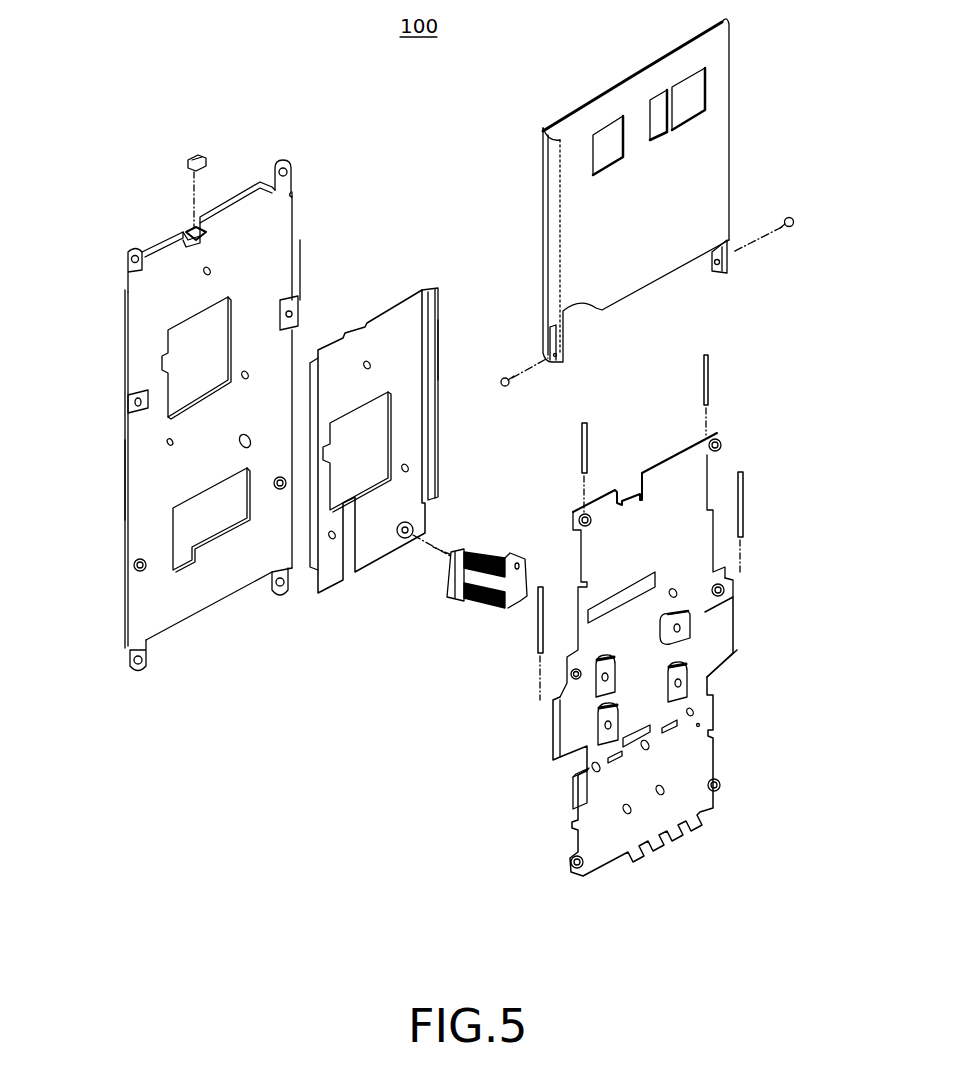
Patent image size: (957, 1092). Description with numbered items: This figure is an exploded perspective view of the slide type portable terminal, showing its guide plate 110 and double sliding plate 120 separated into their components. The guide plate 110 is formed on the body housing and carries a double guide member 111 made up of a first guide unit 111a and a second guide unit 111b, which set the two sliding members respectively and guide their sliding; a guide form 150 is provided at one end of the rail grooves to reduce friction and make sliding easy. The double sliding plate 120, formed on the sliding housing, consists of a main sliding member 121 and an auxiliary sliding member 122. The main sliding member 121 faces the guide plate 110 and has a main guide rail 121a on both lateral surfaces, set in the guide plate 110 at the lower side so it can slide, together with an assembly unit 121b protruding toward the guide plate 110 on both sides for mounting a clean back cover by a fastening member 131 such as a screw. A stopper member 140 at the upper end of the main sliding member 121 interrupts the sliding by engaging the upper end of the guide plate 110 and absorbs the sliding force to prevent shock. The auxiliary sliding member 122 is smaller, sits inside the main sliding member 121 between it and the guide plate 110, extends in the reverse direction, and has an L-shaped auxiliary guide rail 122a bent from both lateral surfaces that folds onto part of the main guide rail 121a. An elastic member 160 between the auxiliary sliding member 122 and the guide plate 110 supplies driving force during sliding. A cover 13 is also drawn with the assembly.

The rear cover / battery cover 13 is at (648, 263).
The guide plate 110 is at (605, 850).
The double guide member 111 is at (812, 636).
The first guide unit 111a is at (737, 628).
The second guide unit 111b is at (710, 470).
The double sliding plate 120 is at (403, 176).
The main sliding member 121 is at (278, 207).
The main guide rail 121a is at (124, 486).
The assembly unit 121b is at (130, 403).
The auxiliary sliding member 122 is at (333, 350).
The auxiliary guide rail 122a is at (438, 345).
The fastening member 131 is at (790, 228).
The stopper member 140 is at (193, 152).
The guide form 150 is at (712, 372).
The elastic member 160 is at (458, 596).